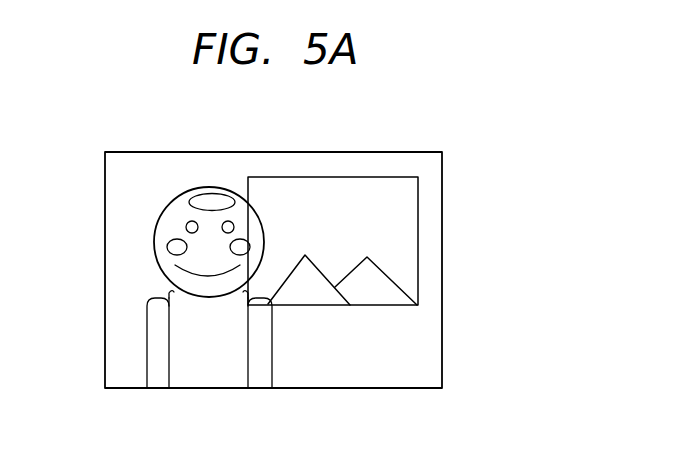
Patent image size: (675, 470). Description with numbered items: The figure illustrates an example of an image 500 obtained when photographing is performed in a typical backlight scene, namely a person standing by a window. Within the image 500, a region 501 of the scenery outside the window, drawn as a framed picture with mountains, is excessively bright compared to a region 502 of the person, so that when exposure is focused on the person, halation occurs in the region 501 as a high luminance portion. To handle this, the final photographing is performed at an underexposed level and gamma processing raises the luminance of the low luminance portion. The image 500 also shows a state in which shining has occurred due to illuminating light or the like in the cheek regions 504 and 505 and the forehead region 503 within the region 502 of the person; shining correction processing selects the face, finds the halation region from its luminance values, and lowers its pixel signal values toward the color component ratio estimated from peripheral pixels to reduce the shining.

The image 500 is at (457, 357).
The region of scenery outside the window 501 is at (352, 213).
The region of the person 502 is at (187, 178).
The forehead region 503 is at (219, 204).
The cheek region 504 is at (173, 246).
The cheek region 505 is at (243, 249).